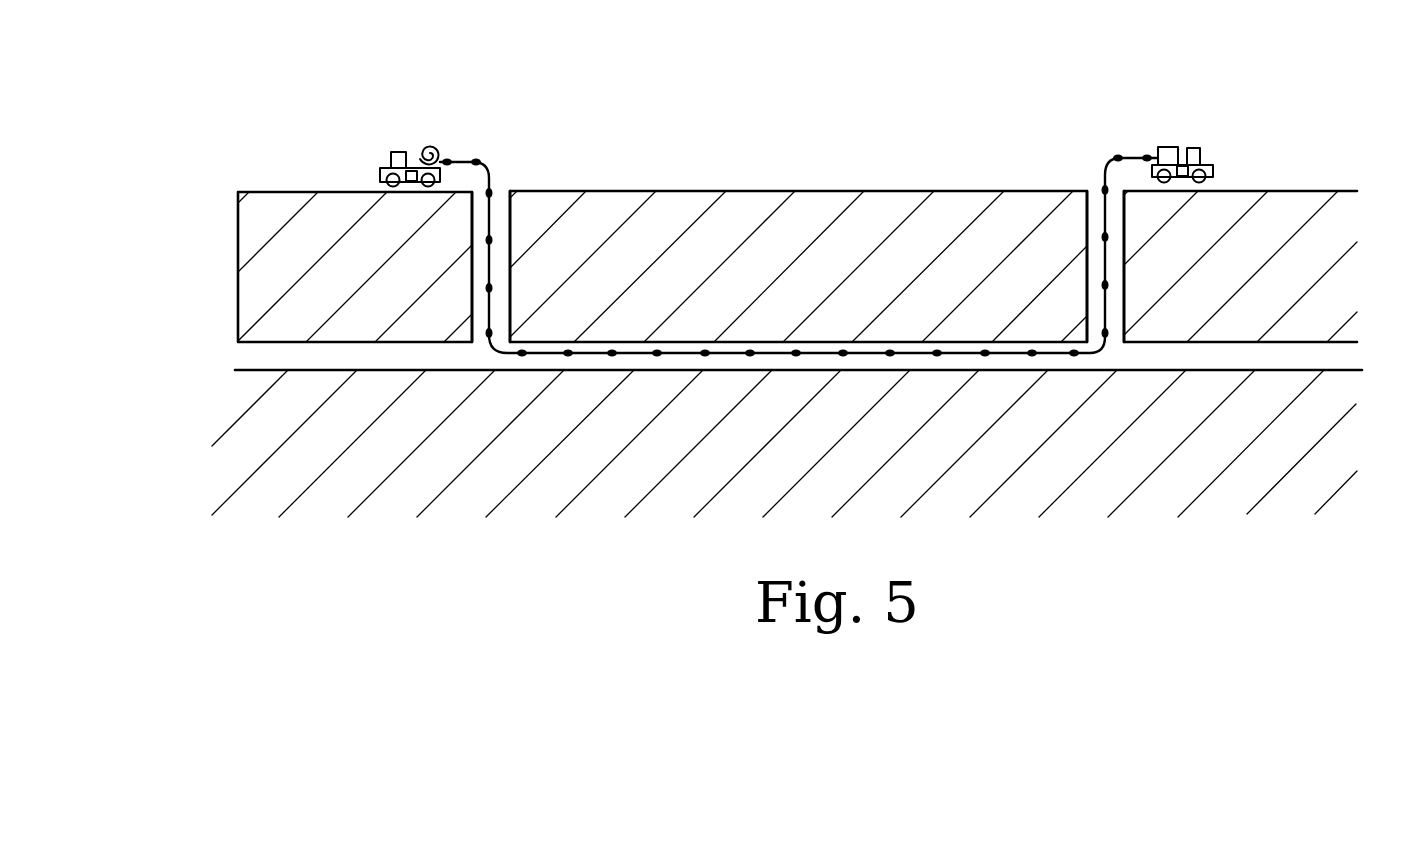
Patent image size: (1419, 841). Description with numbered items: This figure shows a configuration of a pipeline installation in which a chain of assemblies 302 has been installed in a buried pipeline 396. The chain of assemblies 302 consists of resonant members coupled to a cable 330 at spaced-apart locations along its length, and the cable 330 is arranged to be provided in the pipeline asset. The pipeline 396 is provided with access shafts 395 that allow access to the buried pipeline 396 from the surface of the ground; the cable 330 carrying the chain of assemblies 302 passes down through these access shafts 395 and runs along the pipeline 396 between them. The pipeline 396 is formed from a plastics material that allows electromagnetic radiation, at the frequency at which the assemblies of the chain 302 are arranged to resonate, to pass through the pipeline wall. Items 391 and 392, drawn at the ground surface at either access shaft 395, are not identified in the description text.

The chain of assemblies 302 is at (488, 158).
The cable 330 is at (488, 208).
The cable laying vehicle 391 is at (393, 152).
The sealing vehicle 392 is at (1168, 147).
The access shaft 395 is at (487, 280).
The buried pipeline 396 is at (384, 365).